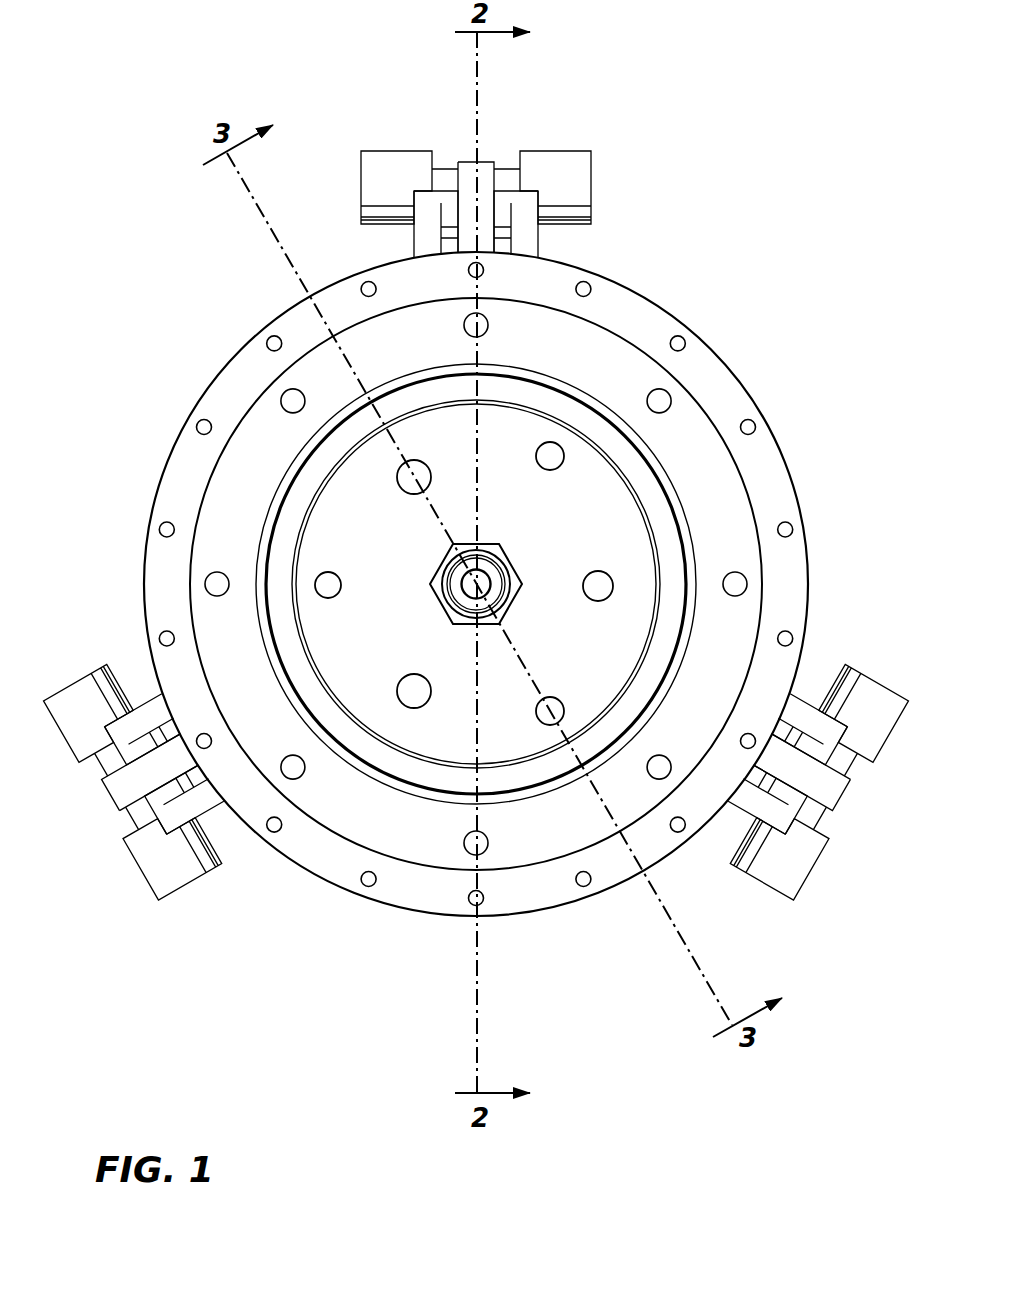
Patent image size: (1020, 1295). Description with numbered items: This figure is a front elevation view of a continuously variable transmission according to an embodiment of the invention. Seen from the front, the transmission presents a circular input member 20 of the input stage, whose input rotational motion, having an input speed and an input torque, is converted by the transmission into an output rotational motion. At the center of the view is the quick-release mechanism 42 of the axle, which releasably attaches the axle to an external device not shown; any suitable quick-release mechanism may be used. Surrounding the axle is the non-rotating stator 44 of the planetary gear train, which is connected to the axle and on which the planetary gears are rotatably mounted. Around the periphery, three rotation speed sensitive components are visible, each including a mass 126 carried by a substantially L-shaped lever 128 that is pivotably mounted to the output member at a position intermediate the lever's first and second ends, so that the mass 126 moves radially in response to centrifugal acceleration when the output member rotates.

The input member 20 is at (720, 373).
The quick-release mechanism 42 is at (515, 568).
The non-rotating stator 44 is at (667, 540).
The mass 126 is at (377, 158).
The lever 128 is at (486, 173).